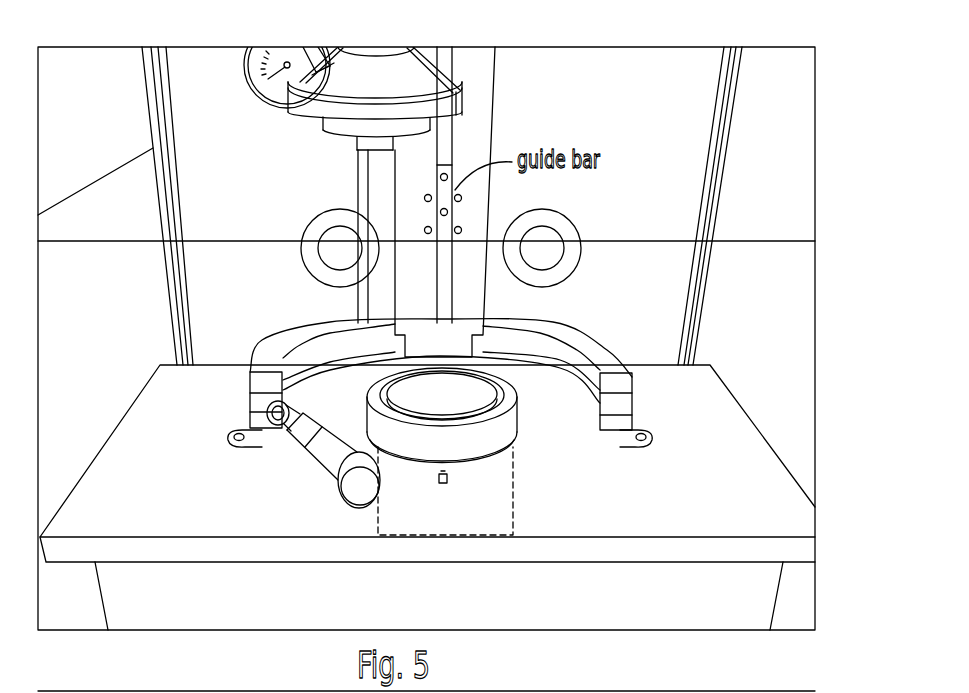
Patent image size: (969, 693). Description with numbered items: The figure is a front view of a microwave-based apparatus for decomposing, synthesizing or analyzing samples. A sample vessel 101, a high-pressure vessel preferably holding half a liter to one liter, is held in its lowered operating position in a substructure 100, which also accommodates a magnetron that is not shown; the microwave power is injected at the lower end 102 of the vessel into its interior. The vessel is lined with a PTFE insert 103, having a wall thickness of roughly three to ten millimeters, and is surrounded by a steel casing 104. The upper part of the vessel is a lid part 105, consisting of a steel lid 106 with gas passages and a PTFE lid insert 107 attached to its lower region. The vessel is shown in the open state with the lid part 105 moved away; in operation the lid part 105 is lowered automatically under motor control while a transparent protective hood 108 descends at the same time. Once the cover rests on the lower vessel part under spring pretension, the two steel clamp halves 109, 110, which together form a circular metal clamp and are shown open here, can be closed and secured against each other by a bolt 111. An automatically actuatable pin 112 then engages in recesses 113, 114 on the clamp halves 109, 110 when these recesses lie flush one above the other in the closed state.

The substructure 100 is at (330, 552).
The sample vessel 101 is at (490, 392).
The lower end of the vessel 102 is at (490, 540).
The PTFE insert 103 is at (498, 420).
The steel casing 104 is at (486, 430).
The lid part 105 is at (425, 83).
The steel lid 106 is at (463, 90).
The PTFE lid insert 107 is at (343, 127).
The transparent protective hood 108 is at (732, 243).
The clamp half 109 is at (635, 392).
The clamp half 110 is at (245, 392).
The bolt 111 is at (332, 480).
The automatically actuatable pin 112 is at (438, 482).
The recess 113 is at (652, 443).
The recess 114 is at (230, 441).